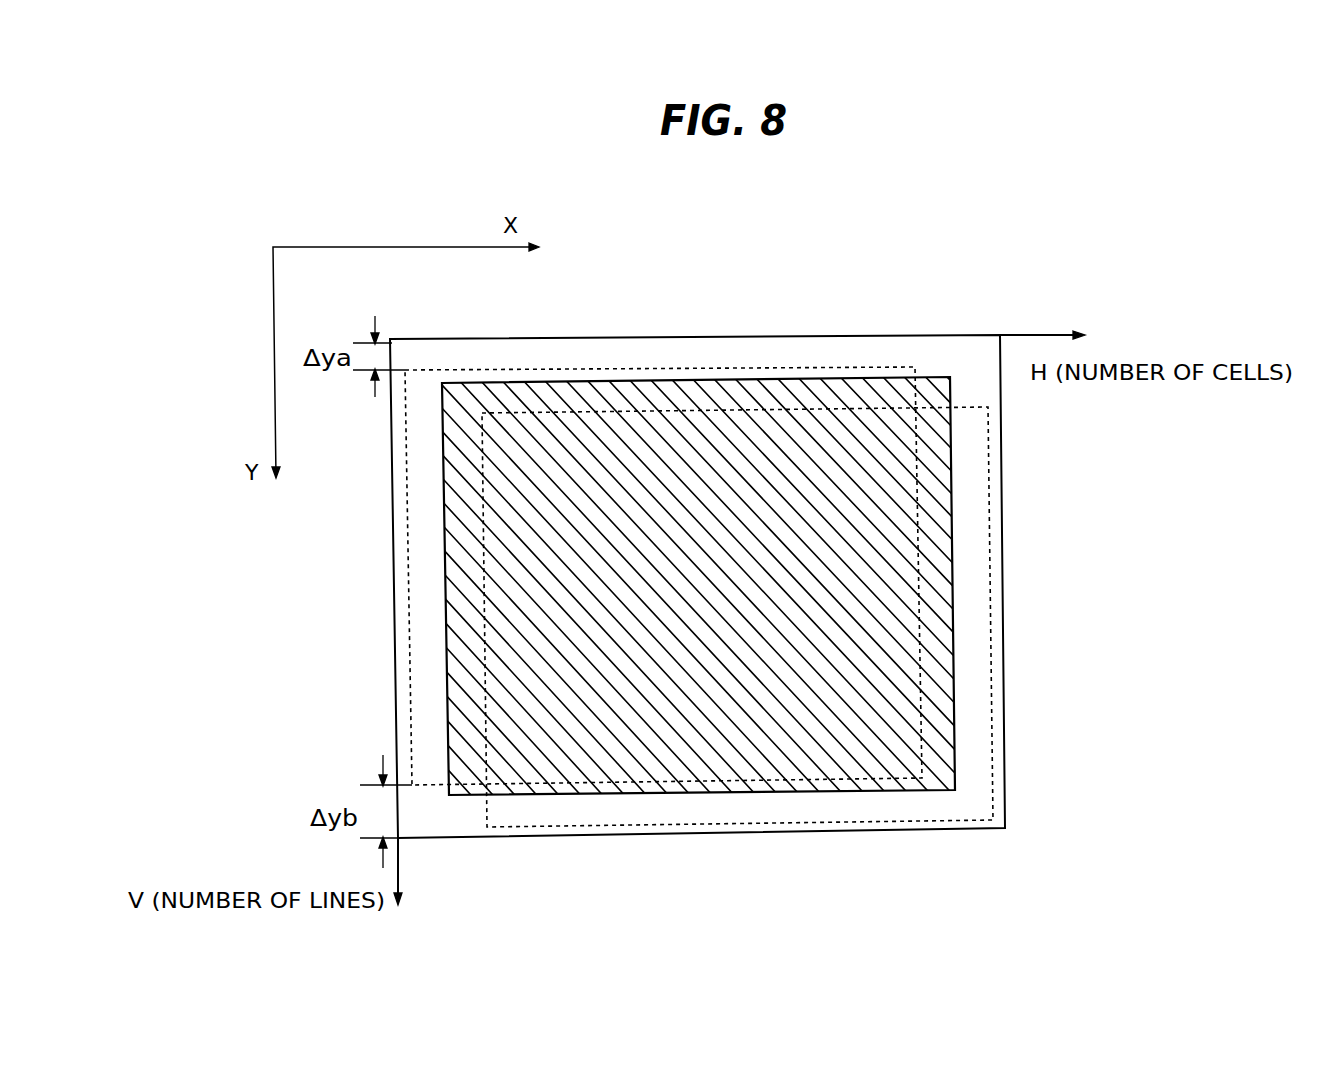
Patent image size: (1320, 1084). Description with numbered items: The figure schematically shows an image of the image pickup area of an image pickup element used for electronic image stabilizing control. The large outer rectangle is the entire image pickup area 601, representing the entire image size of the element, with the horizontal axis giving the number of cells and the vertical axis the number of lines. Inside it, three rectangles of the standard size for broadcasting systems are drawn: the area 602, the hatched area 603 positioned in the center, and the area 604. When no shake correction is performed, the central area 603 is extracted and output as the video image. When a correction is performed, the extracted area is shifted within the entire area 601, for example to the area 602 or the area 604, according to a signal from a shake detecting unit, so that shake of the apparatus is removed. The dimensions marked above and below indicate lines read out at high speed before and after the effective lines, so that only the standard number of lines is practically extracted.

The entire image pickup area 601 is at (570, 339).
The area with standard size of broadcasting systems 602 is at (678, 368).
The area positioned in the center of the entire image pickup area 603 is at (820, 379).
The area with standard size of broadcasting systems 604 is at (848, 821).